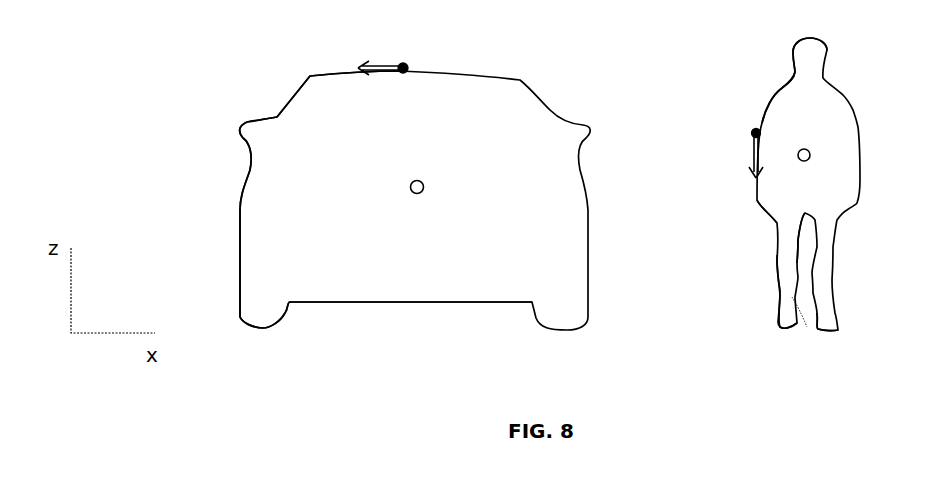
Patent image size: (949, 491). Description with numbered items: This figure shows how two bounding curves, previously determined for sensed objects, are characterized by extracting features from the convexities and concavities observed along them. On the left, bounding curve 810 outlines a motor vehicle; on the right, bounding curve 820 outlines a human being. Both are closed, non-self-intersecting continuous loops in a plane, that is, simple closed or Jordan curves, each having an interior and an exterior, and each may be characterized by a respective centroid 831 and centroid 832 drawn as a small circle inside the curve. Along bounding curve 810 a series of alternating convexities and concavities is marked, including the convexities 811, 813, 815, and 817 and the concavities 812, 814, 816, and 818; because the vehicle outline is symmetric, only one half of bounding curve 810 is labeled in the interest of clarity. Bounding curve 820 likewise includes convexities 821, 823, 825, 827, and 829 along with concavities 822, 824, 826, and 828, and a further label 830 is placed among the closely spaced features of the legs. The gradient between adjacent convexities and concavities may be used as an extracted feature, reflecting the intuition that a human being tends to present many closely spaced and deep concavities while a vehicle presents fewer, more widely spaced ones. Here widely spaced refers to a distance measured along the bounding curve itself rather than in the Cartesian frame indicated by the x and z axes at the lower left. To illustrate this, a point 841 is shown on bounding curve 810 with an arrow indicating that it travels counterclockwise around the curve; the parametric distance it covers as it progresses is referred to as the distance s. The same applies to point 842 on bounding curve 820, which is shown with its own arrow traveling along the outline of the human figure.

The bounding curve 810 is at (512, 50).
The convexity 811 is at (309, 76).
The concavity 812 is at (275, 110).
The convexity 813 is at (238, 128).
The concavity 814 is at (250, 160).
The convexity 815 is at (240, 197).
The concavity 816 is at (240, 250).
The convexity 817 is at (257, 330).
The concavity 818 is at (290, 303).
The centroid 831 is at (410, 182).
The point 841 is at (403, 63).
The bounding curve 820 is at (866, 60).
The convexity 821 is at (793, 45).
The concavity 822 is at (790, 75).
The convexity 823 is at (772, 92).
The concavity 824 is at (770, 212).
The convexity 825 is at (777, 267).
The concavity 826 is at (780, 295).
The convexity 827 is at (780, 323).
The concavity 828 is at (817, 337).
The convexity 829 is at (798, 277).
The thigh 830 is at (797, 252).
The centroid 832 is at (805, 149).
The point 842 is at (752, 133).